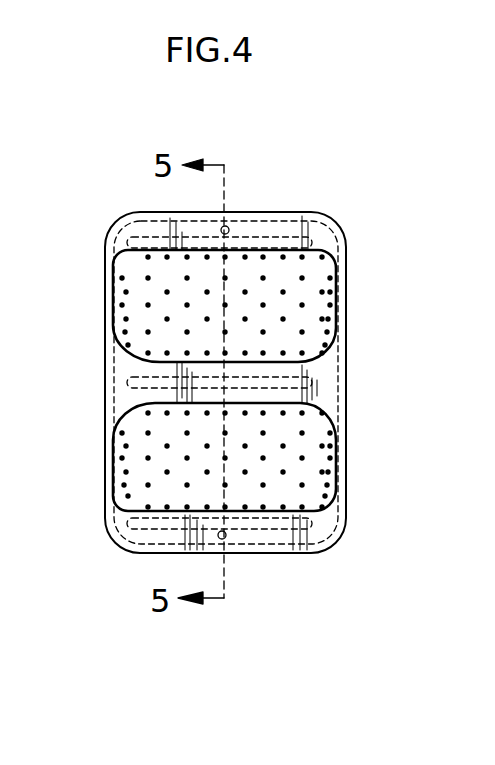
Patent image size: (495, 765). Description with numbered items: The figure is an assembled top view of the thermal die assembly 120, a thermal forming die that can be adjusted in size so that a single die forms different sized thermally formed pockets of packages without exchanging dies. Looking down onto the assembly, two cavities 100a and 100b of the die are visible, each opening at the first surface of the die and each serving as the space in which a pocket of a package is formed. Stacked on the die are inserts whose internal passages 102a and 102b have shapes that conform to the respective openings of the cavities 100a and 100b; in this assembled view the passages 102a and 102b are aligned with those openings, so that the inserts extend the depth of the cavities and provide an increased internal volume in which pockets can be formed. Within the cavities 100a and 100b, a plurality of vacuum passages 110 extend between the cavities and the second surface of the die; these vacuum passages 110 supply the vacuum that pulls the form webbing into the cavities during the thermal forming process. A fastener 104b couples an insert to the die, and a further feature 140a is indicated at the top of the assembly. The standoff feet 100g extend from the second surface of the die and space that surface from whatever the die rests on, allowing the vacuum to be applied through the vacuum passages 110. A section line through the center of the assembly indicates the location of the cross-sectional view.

The thermal die assembly 120 is at (326, 198).
The standoff feet 100g is at (320, 238).
The cavity 100a is at (273, 306).
The internal passage 102a is at (307, 320).
The cavity 100b is at (275, 469).
The internal passage 102b is at (327, 495).
The vacuum passages 110 is at (148, 305).
The upper fill port 140a is at (228, 226).
The fastener 104b is at (224, 539).